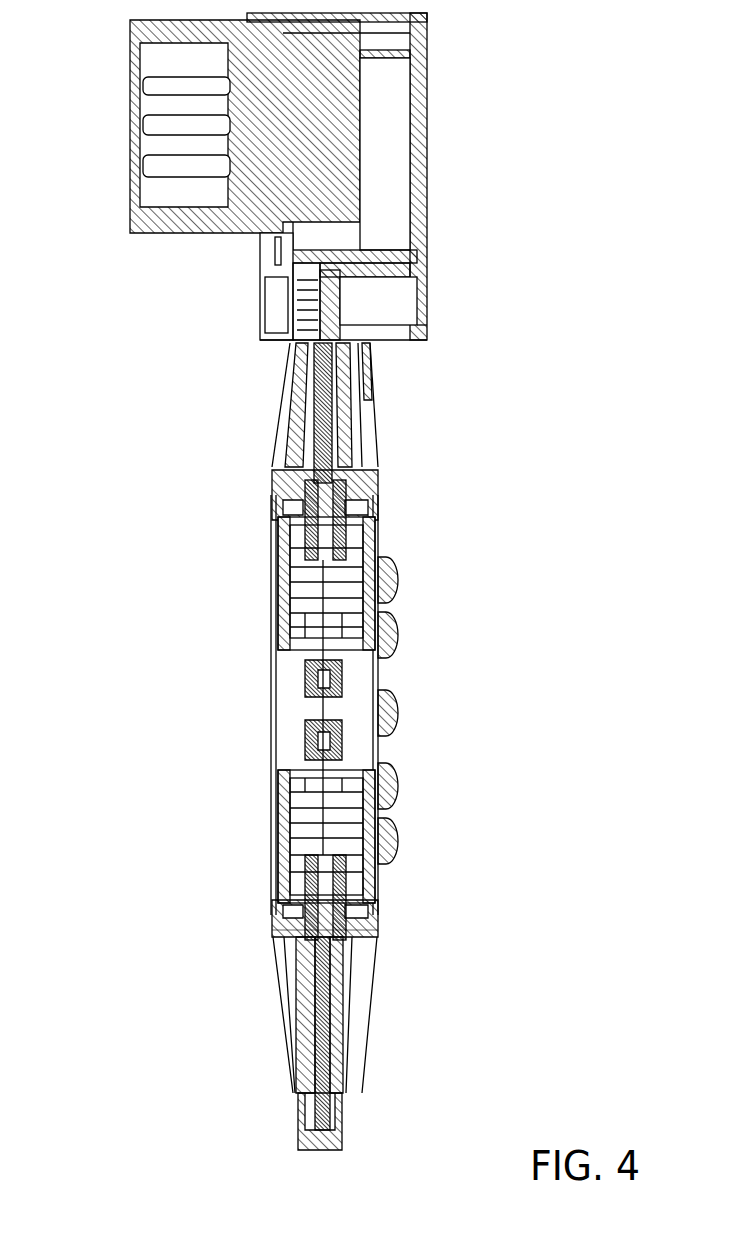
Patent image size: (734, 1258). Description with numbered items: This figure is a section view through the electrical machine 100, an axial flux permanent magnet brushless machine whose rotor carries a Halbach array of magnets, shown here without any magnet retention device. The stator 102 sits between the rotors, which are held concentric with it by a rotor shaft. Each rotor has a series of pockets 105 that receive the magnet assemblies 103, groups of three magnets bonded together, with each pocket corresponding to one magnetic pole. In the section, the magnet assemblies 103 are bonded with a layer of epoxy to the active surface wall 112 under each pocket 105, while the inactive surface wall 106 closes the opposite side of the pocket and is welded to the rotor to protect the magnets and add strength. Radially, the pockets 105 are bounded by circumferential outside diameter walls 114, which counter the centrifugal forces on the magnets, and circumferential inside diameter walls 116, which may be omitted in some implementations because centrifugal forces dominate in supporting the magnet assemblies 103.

The electrical machine 100 is at (312, 601).
The stator 102 is at (330, 1000).
The magnet assemblies 103 is at (300, 1008).
The pockets 105 is at (290, 978).
The inactive surface wall 106 is at (287, 1042).
The active surface wall 112 is at (330, 1050).
The circumferential outside diameter walls 114 is at (300, 1095).
The circumferential inside diameter walls 116 is at (290, 928).